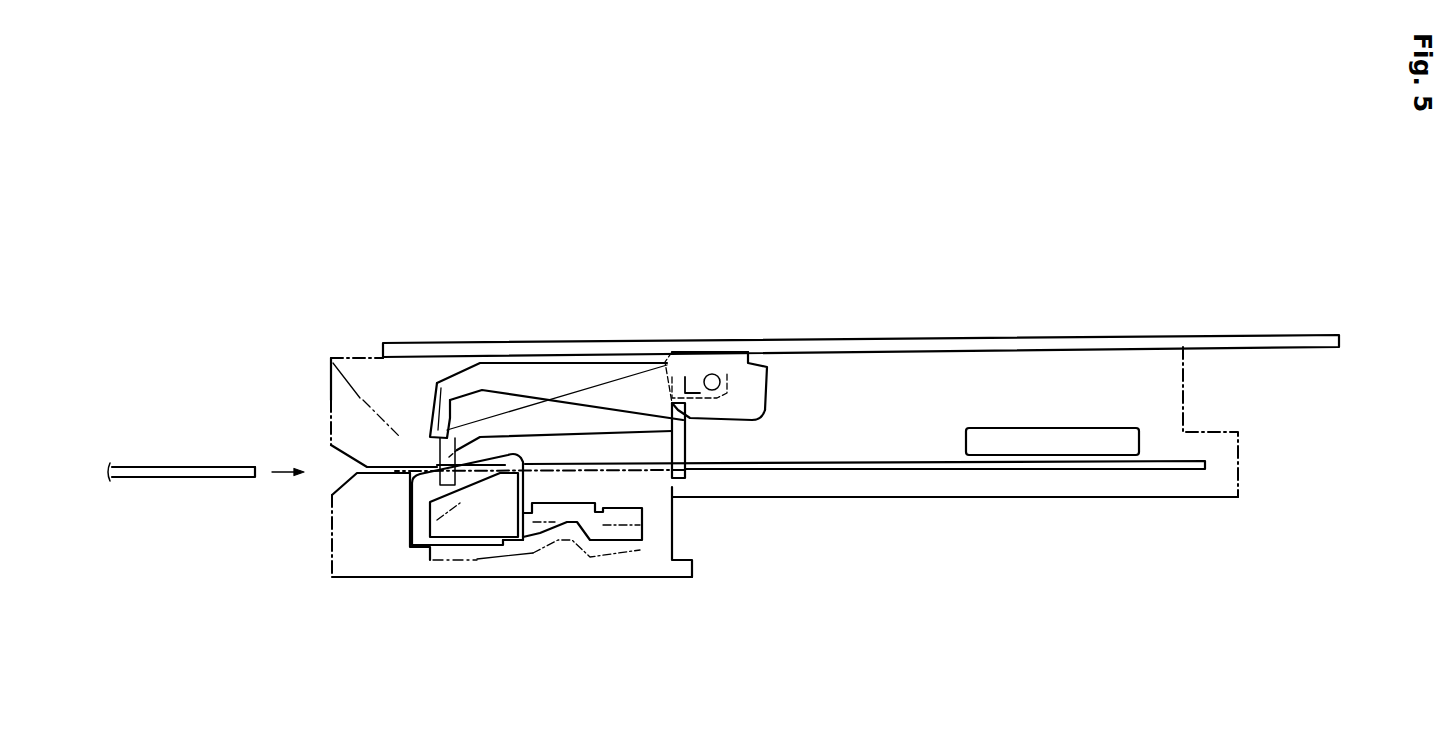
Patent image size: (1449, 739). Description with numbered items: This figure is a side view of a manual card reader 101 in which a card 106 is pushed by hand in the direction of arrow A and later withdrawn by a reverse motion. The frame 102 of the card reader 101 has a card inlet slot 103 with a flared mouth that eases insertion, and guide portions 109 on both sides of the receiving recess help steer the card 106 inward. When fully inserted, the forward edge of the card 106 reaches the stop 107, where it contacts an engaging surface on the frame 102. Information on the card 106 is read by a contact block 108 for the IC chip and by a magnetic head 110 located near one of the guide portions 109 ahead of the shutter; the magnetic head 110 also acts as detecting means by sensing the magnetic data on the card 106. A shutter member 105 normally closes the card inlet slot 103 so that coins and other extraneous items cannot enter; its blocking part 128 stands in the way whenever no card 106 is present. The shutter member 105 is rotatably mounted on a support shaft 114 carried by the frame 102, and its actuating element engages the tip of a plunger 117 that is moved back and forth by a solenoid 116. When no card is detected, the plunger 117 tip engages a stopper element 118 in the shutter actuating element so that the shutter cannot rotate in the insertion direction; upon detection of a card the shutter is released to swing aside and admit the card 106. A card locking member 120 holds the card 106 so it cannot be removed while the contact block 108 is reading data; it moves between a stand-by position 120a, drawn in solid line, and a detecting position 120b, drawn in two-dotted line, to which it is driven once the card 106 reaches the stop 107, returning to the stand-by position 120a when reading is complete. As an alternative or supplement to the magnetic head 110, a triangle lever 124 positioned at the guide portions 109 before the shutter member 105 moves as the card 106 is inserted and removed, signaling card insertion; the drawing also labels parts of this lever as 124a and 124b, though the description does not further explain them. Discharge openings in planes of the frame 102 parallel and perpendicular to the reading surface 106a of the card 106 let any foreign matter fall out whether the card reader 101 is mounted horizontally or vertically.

The card reader 101 is at (225, 293).
The frame 102 is at (330, 392).
The card inlet slot 103 is at (669, 488).
The shutter member 105 is at (680, 450).
The card 106 is at (190, 478).
The reading surface 106a is at (163, 466).
The stop 107 is at (1207, 472).
The contact block 108 is at (1057, 443).
The guide portions 109 is at (390, 475).
The magnetic head 110 is at (418, 480).
The support shaft 114 is at (670, 400).
The solenoid 116 is at (735, 368).
The plunger 117 is at (708, 374).
The stopper element 118 is at (760, 368).
The card locking member 120 is at (490, 417).
The stand-by position 120a is at (418, 447).
The detecting position 120b is at (423, 389).
The triangle lever 124 is at (490, 547).
The engaging portion of hook member 124a is at (510, 547).
The inclined portion of hook member 124b is at (458, 566).
The blocking part 128 is at (328, 357).